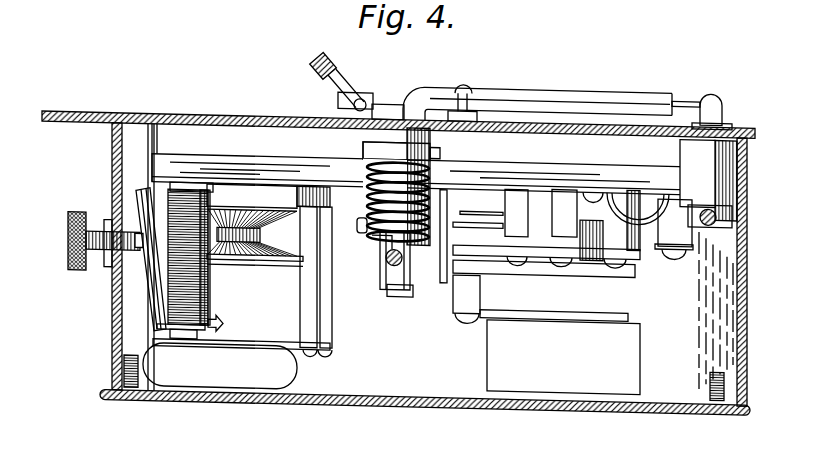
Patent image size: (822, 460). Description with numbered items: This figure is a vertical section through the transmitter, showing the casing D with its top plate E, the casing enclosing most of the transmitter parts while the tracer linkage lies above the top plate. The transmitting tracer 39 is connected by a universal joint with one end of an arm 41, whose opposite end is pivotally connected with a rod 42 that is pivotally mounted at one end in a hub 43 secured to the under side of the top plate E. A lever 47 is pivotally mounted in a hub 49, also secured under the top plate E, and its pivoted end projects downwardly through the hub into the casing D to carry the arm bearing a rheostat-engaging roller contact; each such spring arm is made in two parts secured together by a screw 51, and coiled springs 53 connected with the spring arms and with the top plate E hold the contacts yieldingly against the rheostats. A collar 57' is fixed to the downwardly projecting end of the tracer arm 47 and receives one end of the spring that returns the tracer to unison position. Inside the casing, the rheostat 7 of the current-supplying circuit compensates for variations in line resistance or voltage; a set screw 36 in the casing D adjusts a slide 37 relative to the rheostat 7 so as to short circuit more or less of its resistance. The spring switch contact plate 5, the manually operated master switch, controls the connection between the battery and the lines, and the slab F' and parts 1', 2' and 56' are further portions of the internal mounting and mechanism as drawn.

The top plate E is at (265, 114).
The casing D is at (110, 315).
The spring switch contact plate 5 is at (740, 107).
The cross bar F' is at (420, 159).
The hub 43 is at (708, 184).
The hub 49 is at (430, 127).
The screw 51 is at (363, 140).
The coiled springs 53 is at (367, 218).
The plate 56' is at (367, 245).
The collar 57' is at (383, 273).
The set screw 36 is at (84, 212).
The slide 37 is at (152, 268).
The rheostat 7 is at (228, 275).
The brush assembly 1' is at (237, 286).
The contact assembly 2' is at (566, 291).
The lever 47 is at (547, 80).
The rod 42 is at (707, 80).
The arm 41 is at (395, 96).
The transmitting tracer 39 is at (337, 101).